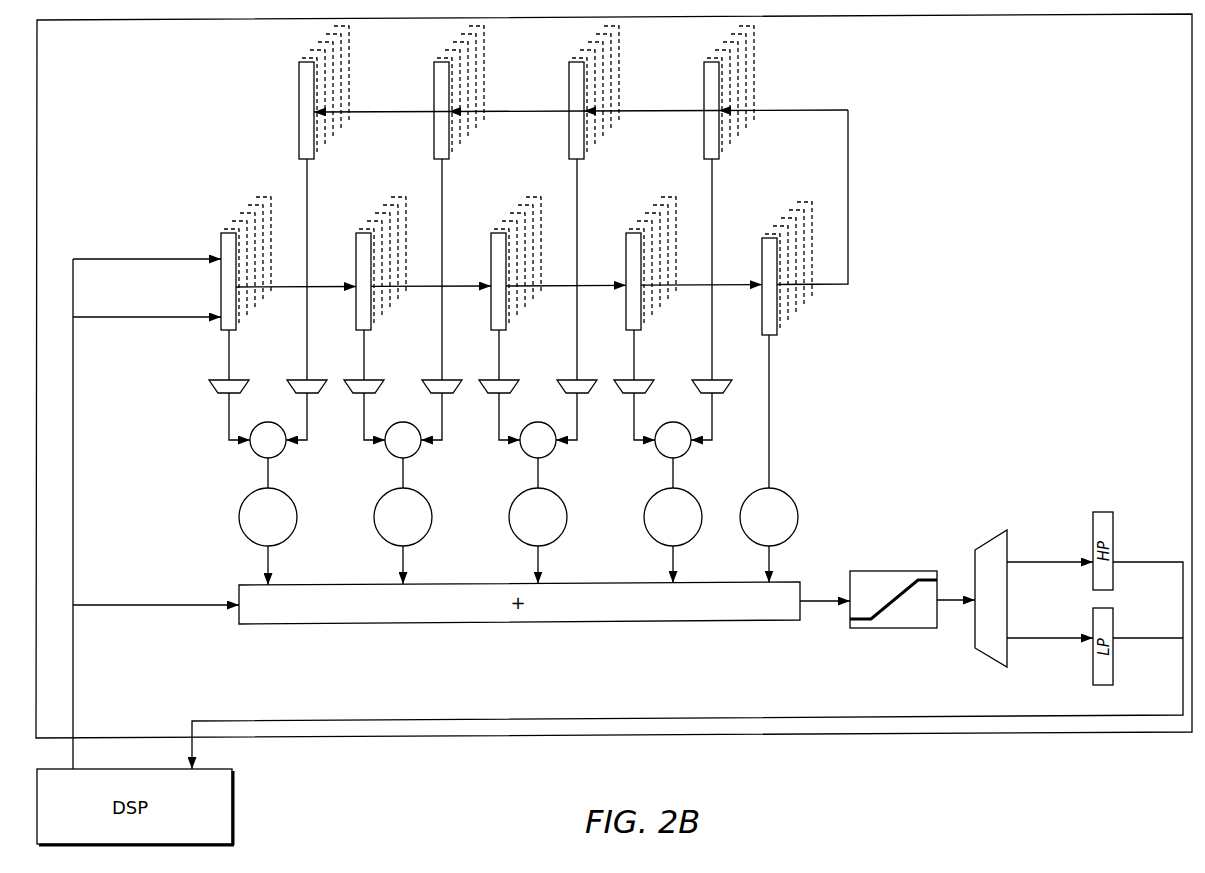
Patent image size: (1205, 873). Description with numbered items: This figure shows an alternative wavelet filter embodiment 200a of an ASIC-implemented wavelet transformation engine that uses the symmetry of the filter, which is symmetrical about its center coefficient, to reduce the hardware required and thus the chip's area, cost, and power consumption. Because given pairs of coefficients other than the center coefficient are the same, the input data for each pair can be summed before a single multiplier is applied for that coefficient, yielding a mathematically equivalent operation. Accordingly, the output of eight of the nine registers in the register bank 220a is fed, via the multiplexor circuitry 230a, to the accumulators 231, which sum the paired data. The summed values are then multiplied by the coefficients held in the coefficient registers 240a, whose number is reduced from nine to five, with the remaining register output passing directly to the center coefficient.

The alternative wavelet filter embodiment 200a is at (1000, 733).
The register bank 220a is at (1015, 26).
The multiplexor circuitry 230a is at (813, 358).
The accumulators 231 is at (813, 412).
The coefficient registers 240a is at (827, 478).